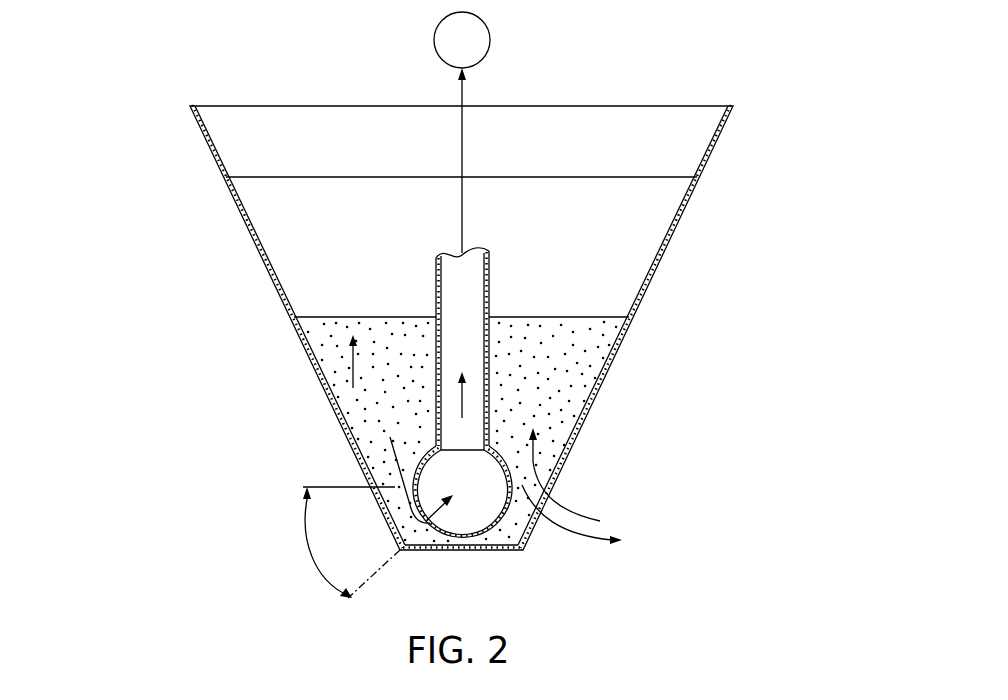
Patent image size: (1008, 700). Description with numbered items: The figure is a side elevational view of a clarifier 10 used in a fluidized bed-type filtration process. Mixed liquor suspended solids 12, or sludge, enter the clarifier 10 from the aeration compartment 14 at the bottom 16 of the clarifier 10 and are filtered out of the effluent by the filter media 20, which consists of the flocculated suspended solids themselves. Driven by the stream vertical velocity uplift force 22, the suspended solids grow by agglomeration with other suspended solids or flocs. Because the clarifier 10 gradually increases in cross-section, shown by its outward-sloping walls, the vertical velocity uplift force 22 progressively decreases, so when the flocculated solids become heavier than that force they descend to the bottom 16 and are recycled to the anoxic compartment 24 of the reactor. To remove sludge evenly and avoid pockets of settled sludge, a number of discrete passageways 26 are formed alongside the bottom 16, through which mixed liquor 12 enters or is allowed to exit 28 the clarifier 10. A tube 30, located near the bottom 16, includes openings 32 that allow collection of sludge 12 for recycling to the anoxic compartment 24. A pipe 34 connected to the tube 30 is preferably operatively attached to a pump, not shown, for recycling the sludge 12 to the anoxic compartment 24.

The clarifier 10 is at (540, 316).
The mixed liquor suspended solids 12 is at (572, 510).
The aeration compartment 14 is at (746, 359).
The bottom 16 is at (298, 326).
The filter media 20 is at (616, 177).
The vertical velocity uplift force 22 is at (356, 367).
The anoxic compartment 24 is at (476, 52).
The discrete passageways 26 is at (528, 541).
The exit 28 is at (588, 544).
The tube 30 is at (473, 523).
The openings 32 is at (388, 448).
The pipe 34 is at (490, 282).